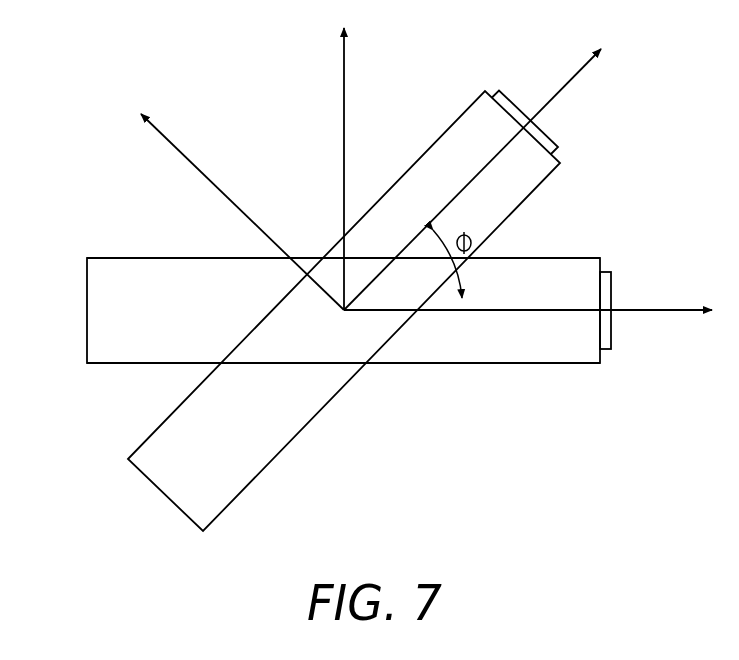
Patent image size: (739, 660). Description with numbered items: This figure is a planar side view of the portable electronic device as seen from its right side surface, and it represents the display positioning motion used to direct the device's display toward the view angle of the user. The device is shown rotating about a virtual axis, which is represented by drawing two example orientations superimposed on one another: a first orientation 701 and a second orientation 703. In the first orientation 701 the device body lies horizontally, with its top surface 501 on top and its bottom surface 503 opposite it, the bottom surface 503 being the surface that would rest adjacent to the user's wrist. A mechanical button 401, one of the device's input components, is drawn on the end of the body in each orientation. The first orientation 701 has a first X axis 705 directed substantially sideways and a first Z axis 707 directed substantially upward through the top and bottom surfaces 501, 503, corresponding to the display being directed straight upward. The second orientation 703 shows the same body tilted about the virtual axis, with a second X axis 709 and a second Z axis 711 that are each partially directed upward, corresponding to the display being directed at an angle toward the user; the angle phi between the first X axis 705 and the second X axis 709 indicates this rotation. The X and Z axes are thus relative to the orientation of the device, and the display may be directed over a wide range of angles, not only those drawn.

The mechanical button 401 is at (607, 349).
The top surface 501 is at (102, 257).
The bottom surface 503 is at (464, 363).
The first orientation 701 is at (100, 320).
The second orientation 703 is at (162, 470).
The first X axis 705 is at (487, 308).
The first Z axis 707 is at (344, 146).
The second X axis 709 is at (486, 164).
The second Z axis 711 is at (210, 180).